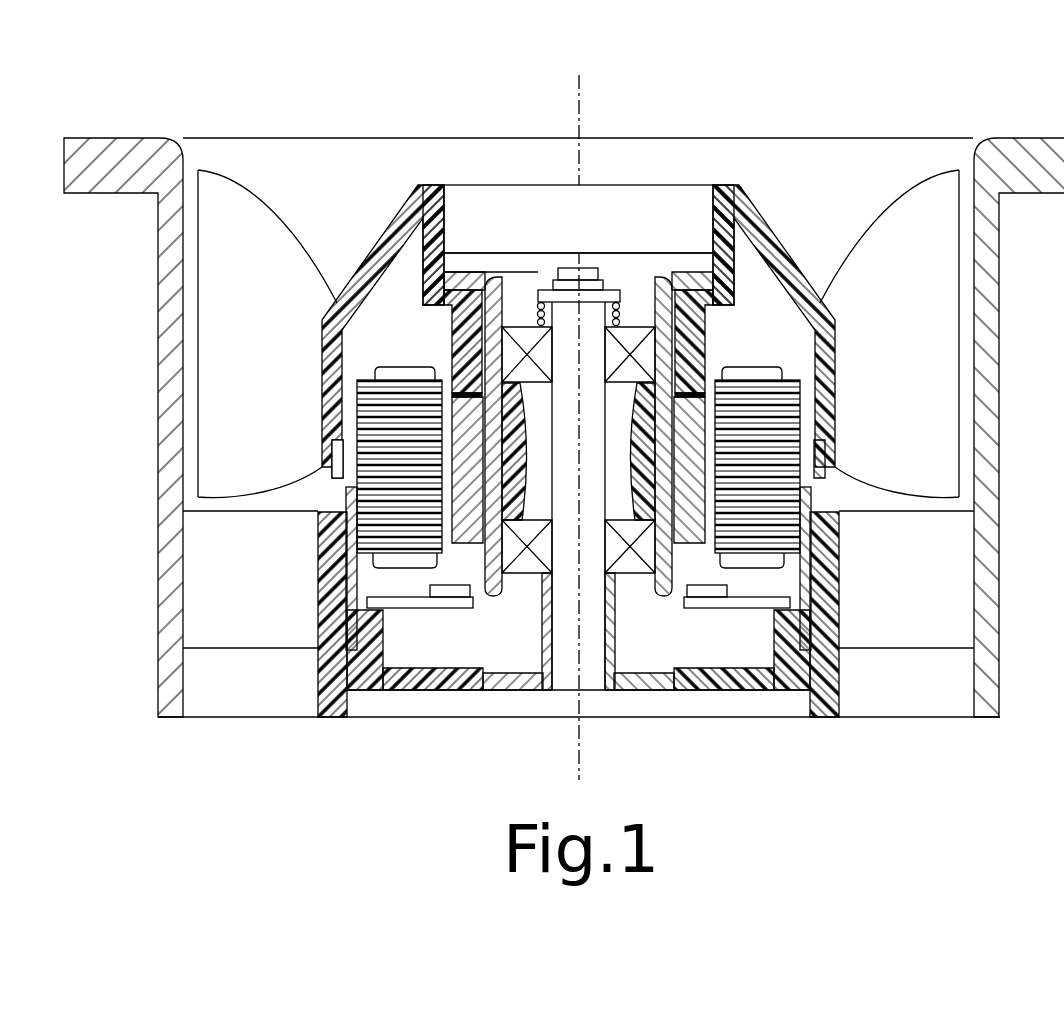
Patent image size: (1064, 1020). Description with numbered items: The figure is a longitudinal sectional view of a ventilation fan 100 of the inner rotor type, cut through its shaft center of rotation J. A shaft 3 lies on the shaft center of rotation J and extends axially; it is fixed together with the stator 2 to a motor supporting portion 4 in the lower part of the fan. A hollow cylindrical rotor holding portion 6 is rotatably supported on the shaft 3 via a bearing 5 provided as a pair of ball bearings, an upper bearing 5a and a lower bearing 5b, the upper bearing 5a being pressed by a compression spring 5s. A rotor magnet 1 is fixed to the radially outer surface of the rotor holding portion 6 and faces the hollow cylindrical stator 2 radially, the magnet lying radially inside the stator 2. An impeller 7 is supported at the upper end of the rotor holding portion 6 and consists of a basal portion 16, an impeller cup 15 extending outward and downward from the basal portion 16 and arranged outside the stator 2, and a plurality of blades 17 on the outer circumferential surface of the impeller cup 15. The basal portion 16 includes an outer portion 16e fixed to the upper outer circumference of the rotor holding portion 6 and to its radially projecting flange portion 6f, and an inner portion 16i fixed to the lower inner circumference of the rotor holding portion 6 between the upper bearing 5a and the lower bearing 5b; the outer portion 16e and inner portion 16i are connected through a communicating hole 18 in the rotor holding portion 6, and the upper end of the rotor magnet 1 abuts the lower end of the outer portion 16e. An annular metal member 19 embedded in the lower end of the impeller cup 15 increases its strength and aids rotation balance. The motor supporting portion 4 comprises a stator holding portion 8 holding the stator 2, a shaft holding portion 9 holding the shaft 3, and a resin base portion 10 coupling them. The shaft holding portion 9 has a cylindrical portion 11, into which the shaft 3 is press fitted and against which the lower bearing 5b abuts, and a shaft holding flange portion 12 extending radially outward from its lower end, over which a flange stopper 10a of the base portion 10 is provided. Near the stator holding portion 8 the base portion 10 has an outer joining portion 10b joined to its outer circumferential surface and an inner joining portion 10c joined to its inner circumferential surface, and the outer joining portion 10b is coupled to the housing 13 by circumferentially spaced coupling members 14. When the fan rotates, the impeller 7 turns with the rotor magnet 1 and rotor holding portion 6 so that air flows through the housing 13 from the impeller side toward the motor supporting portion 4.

The rotor magnet 1 is at (703, 417).
The stator 2 is at (775, 432).
The shaft 3 is at (590, 273).
The motor supporting portion 4 is at (538, 782).
The bearing 5 is at (633, 332).
The upper bearing 5a is at (527, 337).
The lower bearing 5b is at (524, 565).
The compression spring 5s is at (540, 325).
The rotor holding portion 6 is at (596, 403).
The flange portion 6f is at (462, 278).
The impeller 7 is at (478, 80).
The stator holding portion 8 is at (370, 660).
The shaft holding portion 9 is at (570, 748).
The base portion 10 is at (427, 680).
The flange stopper 10a is at (503, 675).
The outer joining portion 10b is at (327, 563).
The inner joining portion 10c is at (365, 555).
The cylindrical portion 11 is at (560, 686).
The shaft holding flange portion 12 is at (505, 686).
The housing 13 is at (165, 578).
The coupling members 14 is at (205, 627).
The impeller cup 15 is at (356, 246).
The basal portion 16 is at (520, 112).
The outer portion 16e is at (457, 347).
The inner portion 16i is at (513, 387).
The blades 17 is at (256, 232).
The communicating hole 18 is at (482, 393).
The annular metal member 19 is at (330, 462).
The ventilation fan 100 is at (1020, 108).
The shaft center of rotation J is at (583, 82).